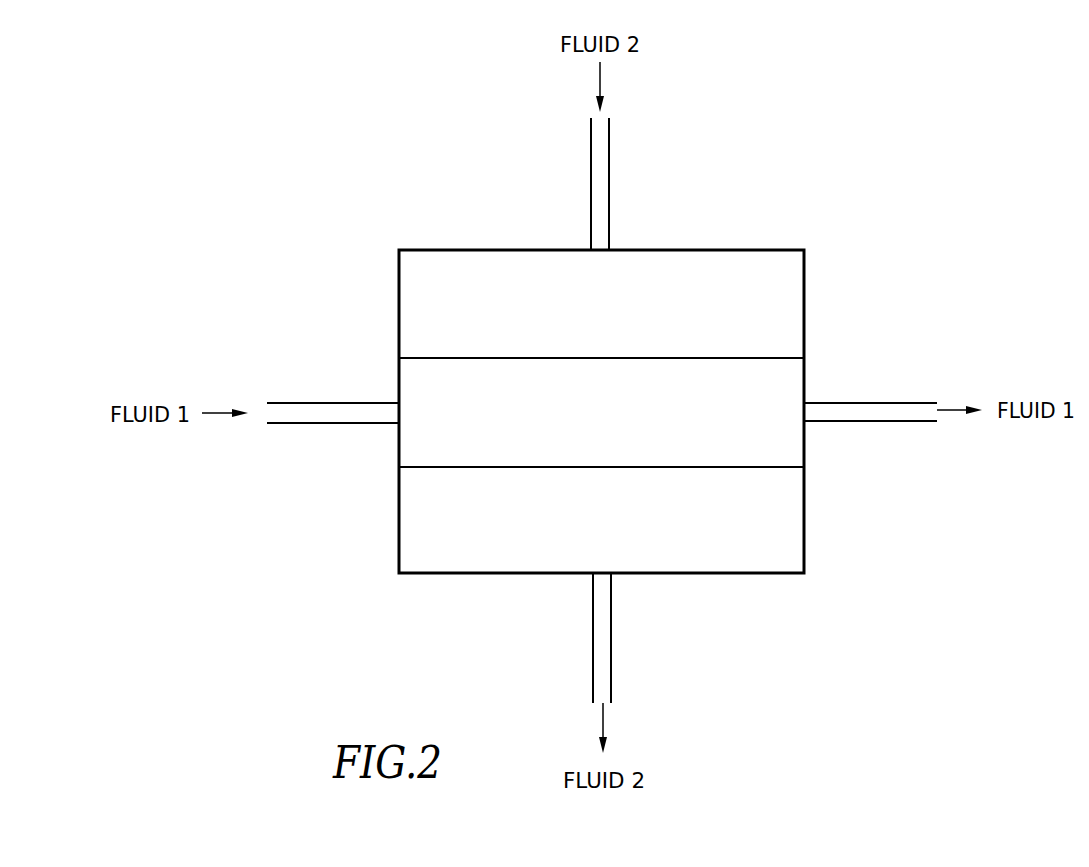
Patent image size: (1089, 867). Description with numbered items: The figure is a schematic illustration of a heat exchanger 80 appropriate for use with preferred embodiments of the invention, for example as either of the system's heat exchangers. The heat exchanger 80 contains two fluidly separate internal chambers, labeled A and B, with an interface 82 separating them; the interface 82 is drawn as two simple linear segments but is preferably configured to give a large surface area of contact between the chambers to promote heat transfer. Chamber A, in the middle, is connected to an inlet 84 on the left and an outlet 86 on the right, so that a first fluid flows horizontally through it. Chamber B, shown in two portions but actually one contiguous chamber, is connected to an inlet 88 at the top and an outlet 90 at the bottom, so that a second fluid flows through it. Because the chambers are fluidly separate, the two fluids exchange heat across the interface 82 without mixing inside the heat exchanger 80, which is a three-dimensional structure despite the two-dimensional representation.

The heat exchanger 80 is at (330, 198).
The interface 82 is at (713, 358).
The inlet 84 is at (323, 423).
The outlet 86 is at (870, 403).
The inlet 88 is at (610, 182).
The outlet 90 is at (612, 638).